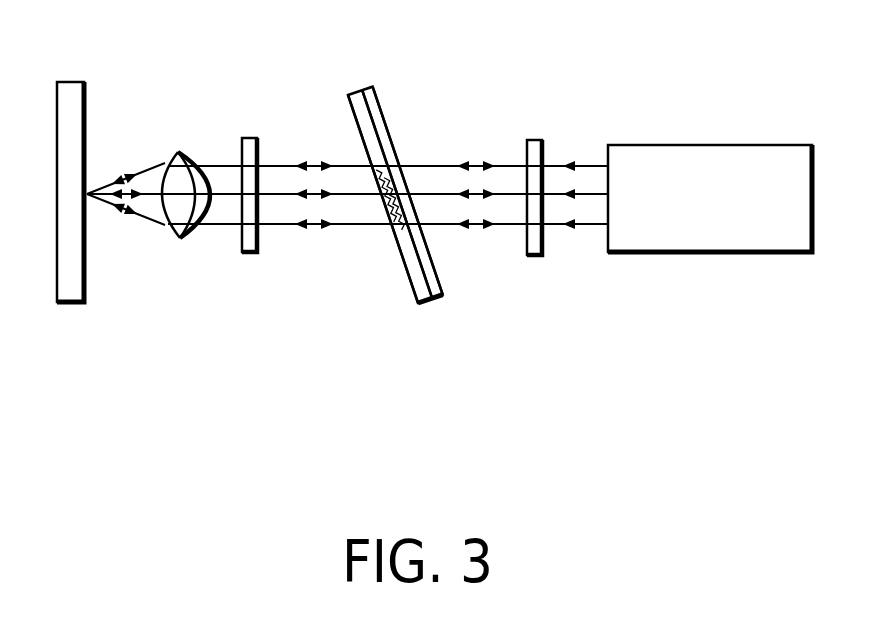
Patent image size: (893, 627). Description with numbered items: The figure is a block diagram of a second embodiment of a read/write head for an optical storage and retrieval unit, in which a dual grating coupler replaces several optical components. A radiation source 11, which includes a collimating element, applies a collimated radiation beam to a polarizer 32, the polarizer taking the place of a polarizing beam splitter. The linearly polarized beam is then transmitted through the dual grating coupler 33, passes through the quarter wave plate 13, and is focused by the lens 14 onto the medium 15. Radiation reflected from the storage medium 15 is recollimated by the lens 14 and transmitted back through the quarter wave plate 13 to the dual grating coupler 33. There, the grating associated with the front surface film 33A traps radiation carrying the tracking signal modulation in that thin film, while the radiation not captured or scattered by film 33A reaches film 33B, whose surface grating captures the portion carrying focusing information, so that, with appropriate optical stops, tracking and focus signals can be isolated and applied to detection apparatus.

The radiation source 11 is at (712, 145).
The quarter wave plate 13 is at (248, 138).
The lens 14 is at (180, 152).
The medium 15 is at (70, 81).
The polarizer 32 is at (533, 140).
The dual grating coupler 33 is at (433, 250).
The front surface film 33A is at (418, 303).
The film 33B is at (443, 297).